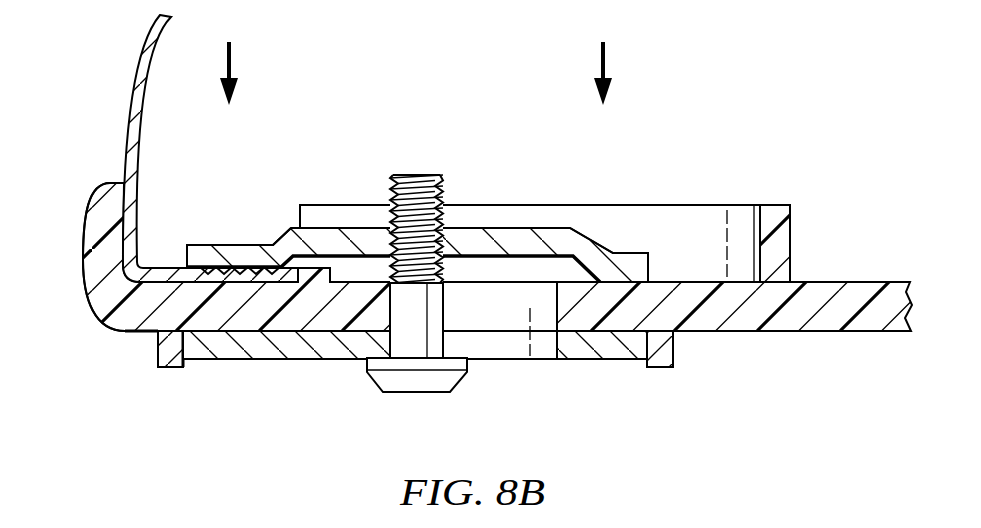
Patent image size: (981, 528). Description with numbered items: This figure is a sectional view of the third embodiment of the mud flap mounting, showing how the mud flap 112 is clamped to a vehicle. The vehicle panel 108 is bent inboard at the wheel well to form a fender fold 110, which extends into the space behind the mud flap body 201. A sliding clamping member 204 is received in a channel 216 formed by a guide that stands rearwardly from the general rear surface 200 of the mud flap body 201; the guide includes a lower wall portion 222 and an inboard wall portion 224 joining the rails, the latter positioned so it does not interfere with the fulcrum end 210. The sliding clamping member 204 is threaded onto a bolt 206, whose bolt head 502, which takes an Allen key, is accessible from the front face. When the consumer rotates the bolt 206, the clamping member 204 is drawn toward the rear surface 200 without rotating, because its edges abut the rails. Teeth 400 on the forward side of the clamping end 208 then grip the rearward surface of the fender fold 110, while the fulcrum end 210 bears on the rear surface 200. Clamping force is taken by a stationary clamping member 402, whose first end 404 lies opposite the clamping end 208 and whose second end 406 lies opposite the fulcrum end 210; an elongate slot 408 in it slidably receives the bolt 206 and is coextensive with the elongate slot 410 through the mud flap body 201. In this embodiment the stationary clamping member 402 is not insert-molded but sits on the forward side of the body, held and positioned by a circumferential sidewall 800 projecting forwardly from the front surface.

The panel 108 is at (127, 127).
The fender fold 110 is at (143, 302).
The mud flap 112 is at (827, 332).
The rear surface 200 is at (882, 282).
The mud flap body 201 is at (707, 332).
The sliding clamping member 204 is at (603, 233).
The bolt 206 is at (401, 173).
The clamping end 208 is at (197, 243).
The fulcrum end 210 is at (627, 247).
The channel 216 is at (711, 212).
The lower wall portion 222 is at (748, 204).
The inboard wall portion 224 is at (792, 229).
The teeth 400 is at (242, 262).
The stationary clamping member 402 is at (332, 348).
The first end 404 is at (198, 362).
The second end 406 is at (630, 360).
The elongate slot 408 is at (515, 348).
The elongate slot 410 is at (557, 313).
The bolt head 502 is at (415, 395).
The circumferential sidewall 800 is at (167, 369).